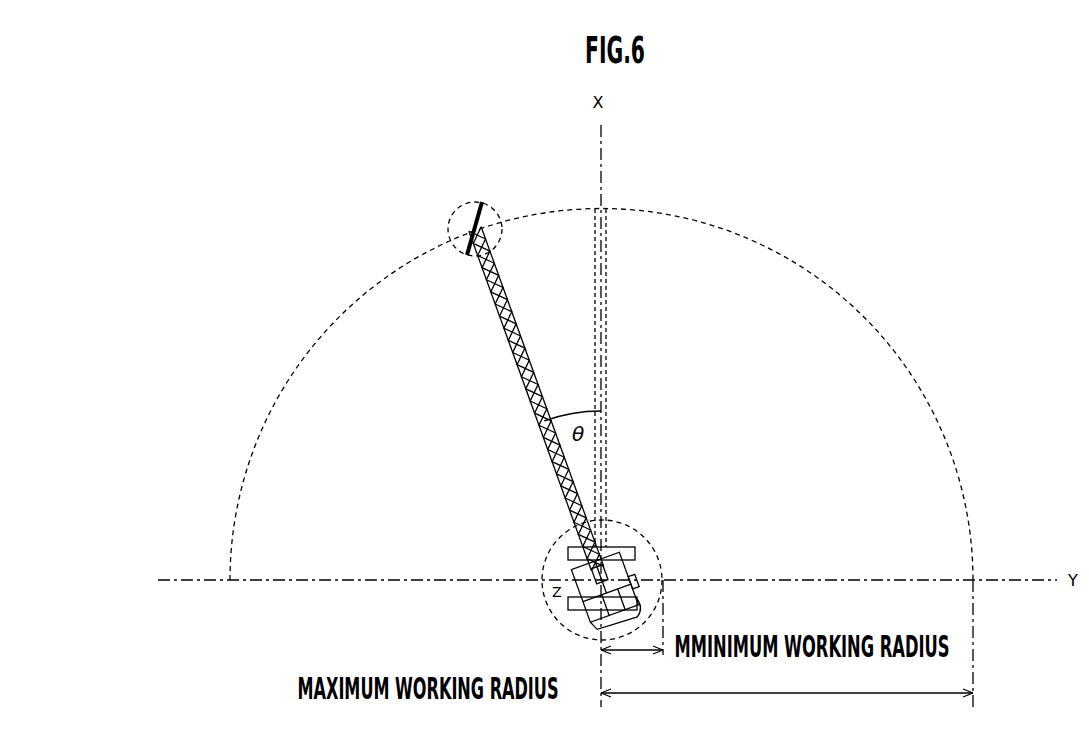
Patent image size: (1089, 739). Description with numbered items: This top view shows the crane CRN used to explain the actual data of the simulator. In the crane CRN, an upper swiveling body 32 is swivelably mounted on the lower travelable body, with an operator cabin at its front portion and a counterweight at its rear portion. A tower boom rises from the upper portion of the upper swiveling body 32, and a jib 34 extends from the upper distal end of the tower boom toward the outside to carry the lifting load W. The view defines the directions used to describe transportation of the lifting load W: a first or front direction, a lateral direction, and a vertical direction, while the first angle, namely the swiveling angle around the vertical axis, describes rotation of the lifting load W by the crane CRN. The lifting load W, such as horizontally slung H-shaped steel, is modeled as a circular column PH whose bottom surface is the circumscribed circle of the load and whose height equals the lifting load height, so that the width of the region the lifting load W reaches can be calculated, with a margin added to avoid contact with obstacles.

The upper swiveling body 32 is at (583, 623).
The jib 34 is at (523, 378).
The crane CRN is at (533, 565).
The circular column of the lifting load PH is at (471, 202).
The lifting load W is at (466, 257).